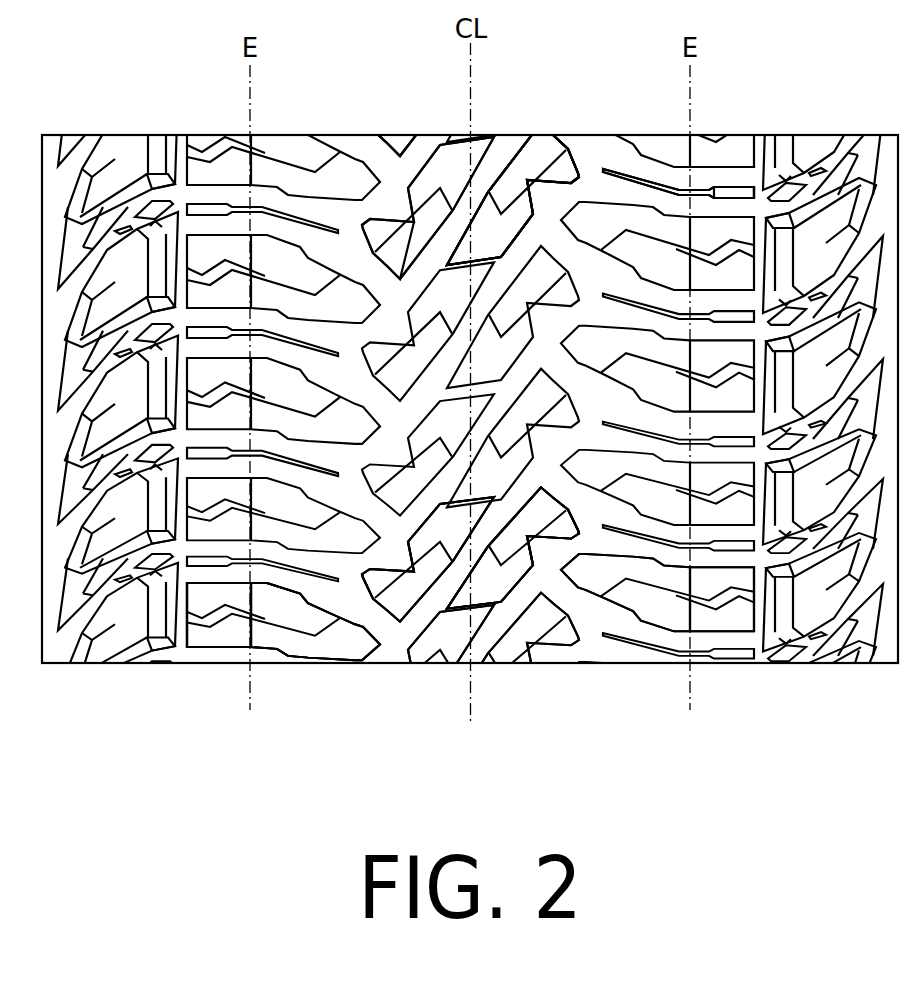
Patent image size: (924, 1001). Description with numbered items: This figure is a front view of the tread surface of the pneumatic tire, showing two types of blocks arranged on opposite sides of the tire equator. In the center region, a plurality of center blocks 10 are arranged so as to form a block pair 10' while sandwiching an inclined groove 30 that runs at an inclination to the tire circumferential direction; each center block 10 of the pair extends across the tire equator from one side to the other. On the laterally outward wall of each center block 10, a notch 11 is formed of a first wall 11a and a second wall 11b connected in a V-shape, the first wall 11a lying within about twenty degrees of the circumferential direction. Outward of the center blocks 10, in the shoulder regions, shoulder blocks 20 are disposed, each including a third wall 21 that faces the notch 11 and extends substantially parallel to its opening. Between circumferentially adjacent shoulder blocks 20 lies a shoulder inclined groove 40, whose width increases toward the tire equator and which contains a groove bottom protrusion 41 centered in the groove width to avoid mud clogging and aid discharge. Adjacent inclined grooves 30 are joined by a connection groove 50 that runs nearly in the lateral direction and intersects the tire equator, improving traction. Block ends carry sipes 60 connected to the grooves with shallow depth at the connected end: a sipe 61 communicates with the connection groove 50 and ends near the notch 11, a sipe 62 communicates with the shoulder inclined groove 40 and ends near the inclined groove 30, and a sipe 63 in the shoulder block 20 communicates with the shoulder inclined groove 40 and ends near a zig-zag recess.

The center block 10 is at (479, 139).
The block pair 10' is at (480, 139).
The notch 11 is at (565, 188).
The first wall 11a is at (405, 200).
The second wall 11b is at (387, 218).
The shoulder block 20 is at (667, 610).
The third wall 21 is at (547, 565).
The inclined groove 30 is at (487, 632).
The shoulder inclined groove 40 is at (663, 170).
The groove bottom protrusion 41 is at (708, 188).
The connection groove 50 is at (463, 660).
The sipe 60 is at (393, 593).
The sipe 61 is at (463, 608).
The sipe 62 is at (393, 593).
The sipe 63 is at (295, 628).